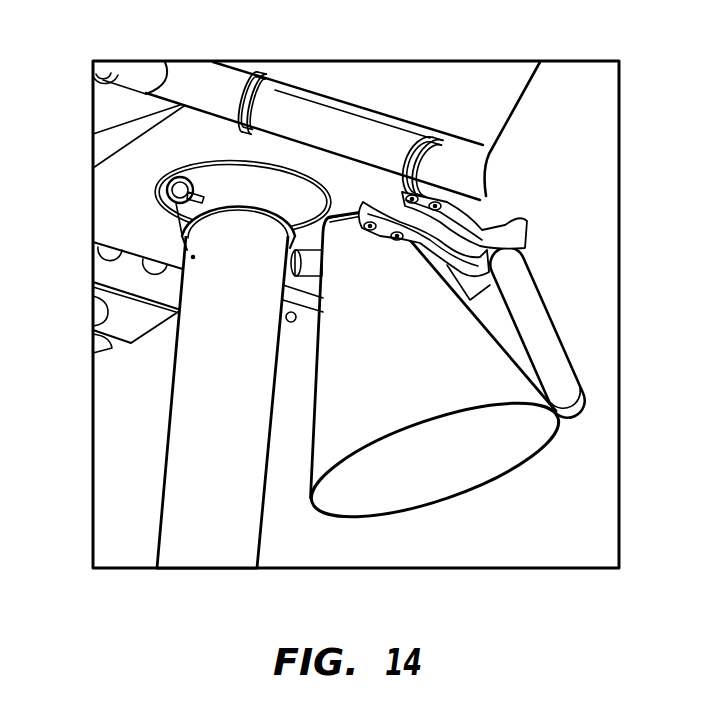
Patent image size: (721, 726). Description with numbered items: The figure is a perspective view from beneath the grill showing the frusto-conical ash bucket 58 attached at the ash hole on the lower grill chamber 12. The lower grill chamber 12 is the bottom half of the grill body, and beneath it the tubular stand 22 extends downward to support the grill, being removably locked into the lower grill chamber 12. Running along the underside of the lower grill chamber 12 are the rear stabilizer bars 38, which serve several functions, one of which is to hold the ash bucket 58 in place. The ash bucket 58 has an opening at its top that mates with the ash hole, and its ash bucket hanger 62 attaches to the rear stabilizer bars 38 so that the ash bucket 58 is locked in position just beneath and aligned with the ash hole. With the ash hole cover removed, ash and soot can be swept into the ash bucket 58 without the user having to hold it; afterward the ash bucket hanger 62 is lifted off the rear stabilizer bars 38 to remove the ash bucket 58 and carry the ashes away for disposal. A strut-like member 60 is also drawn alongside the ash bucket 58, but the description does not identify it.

The lower grill chamber 12 is at (528, 92).
The tubular stand 22 is at (170, 457).
The rear stabilizer bars 38 is at (527, 222).
The ash bucket 58 is at (521, 472).
The strut 60 is at (540, 326).
The ash bucket hanger 62 is at (470, 288).